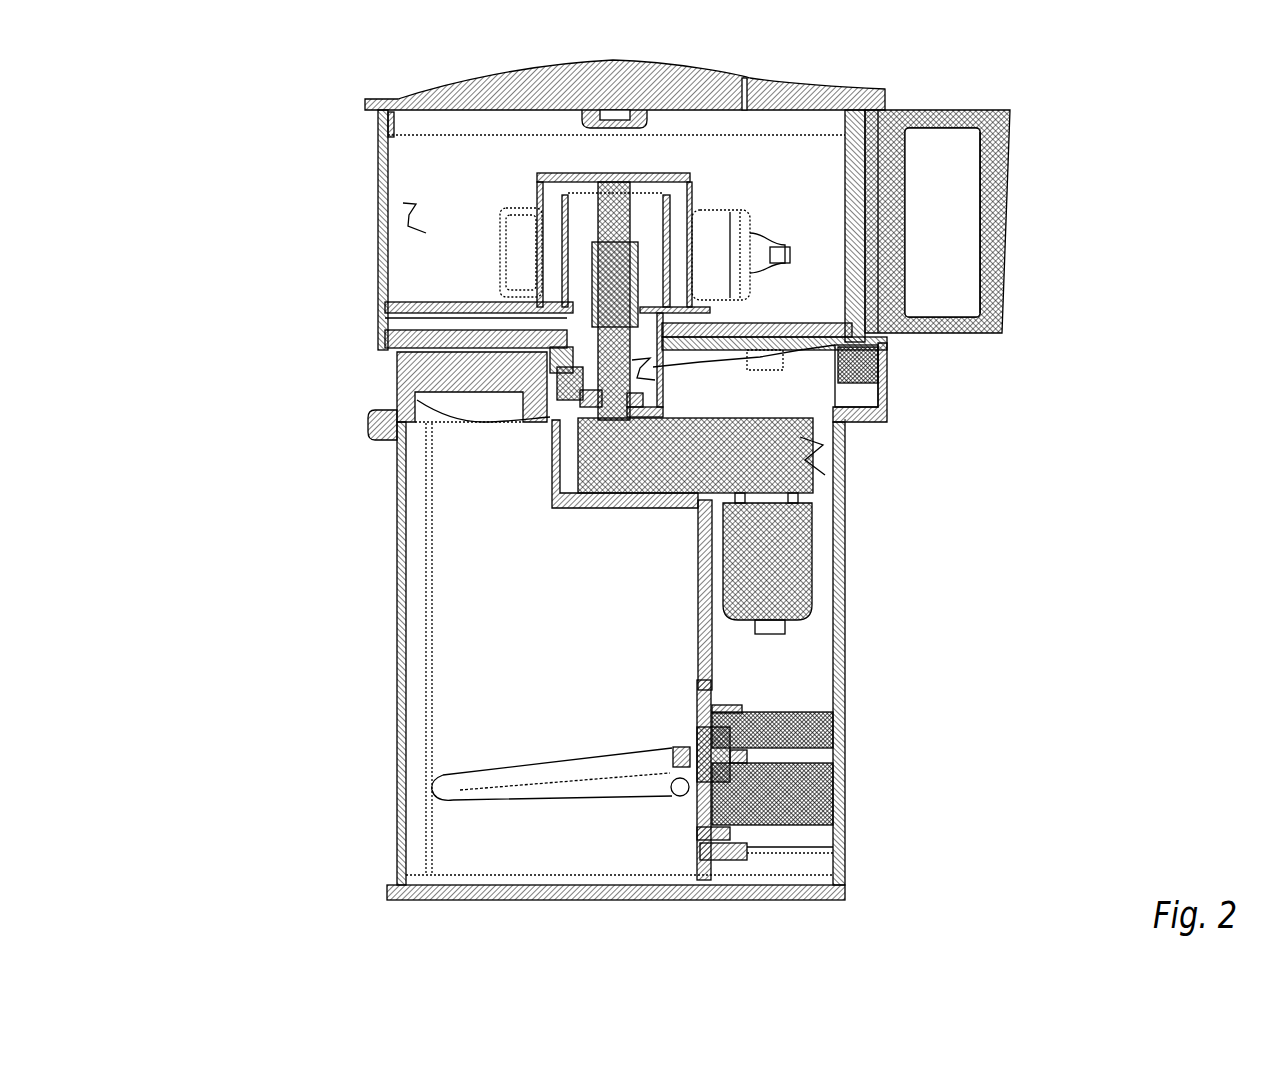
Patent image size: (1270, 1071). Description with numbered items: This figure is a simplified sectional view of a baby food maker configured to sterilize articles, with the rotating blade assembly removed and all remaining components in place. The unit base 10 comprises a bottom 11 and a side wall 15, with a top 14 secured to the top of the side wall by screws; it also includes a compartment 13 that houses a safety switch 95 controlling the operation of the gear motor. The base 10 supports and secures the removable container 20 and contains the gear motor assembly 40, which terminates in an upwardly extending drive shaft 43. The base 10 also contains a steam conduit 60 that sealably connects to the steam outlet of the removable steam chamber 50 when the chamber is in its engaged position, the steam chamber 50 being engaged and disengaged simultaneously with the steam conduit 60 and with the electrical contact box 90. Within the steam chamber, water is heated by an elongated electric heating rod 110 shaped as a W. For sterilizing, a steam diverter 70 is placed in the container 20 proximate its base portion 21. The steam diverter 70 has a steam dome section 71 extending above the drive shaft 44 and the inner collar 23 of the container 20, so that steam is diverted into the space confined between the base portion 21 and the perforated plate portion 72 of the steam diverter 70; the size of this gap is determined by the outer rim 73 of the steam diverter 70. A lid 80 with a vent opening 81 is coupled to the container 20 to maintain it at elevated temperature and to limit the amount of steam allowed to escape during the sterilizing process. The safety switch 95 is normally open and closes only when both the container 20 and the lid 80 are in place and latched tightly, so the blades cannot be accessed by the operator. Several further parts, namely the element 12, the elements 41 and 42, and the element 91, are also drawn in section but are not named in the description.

The unit base 10 is at (780, 698).
The bottom 11 is at (845, 885).
The mounting tab 12 is at (368, 422).
The compartment 13 is at (867, 420).
The top 14 is at (907, 290).
The side wall 15 is at (398, 703).
The removable container 20 is at (447, 300).
The base portion 21 is at (390, 330).
The inner collar 23 is at (560, 237).
The gear motor assembly 40 is at (832, 480).
The motor 41 is at (812, 556).
The support wall 42 is at (747, 580).
The drive shaft 43 is at (475, 303).
The drive shaft 44 is at (907, 277).
The steam chamber 50 is at (556, 638).
The steam conduit 60 is at (395, 350).
The steam diverter 70 is at (912, 120).
The steam dome section 71 is at (547, 176).
The perforated plate portion 72 is at (395, 308).
The outer rim 73 is at (395, 318).
The lid 80 is at (620, 80).
The vent opening 81 is at (690, 200).
The electrical contact box 90 is at (845, 780).
The upper coil 91 is at (843, 738).
The safety switch 95 is at (883, 382).
The elongated electric heating rod 110 is at (593, 763).